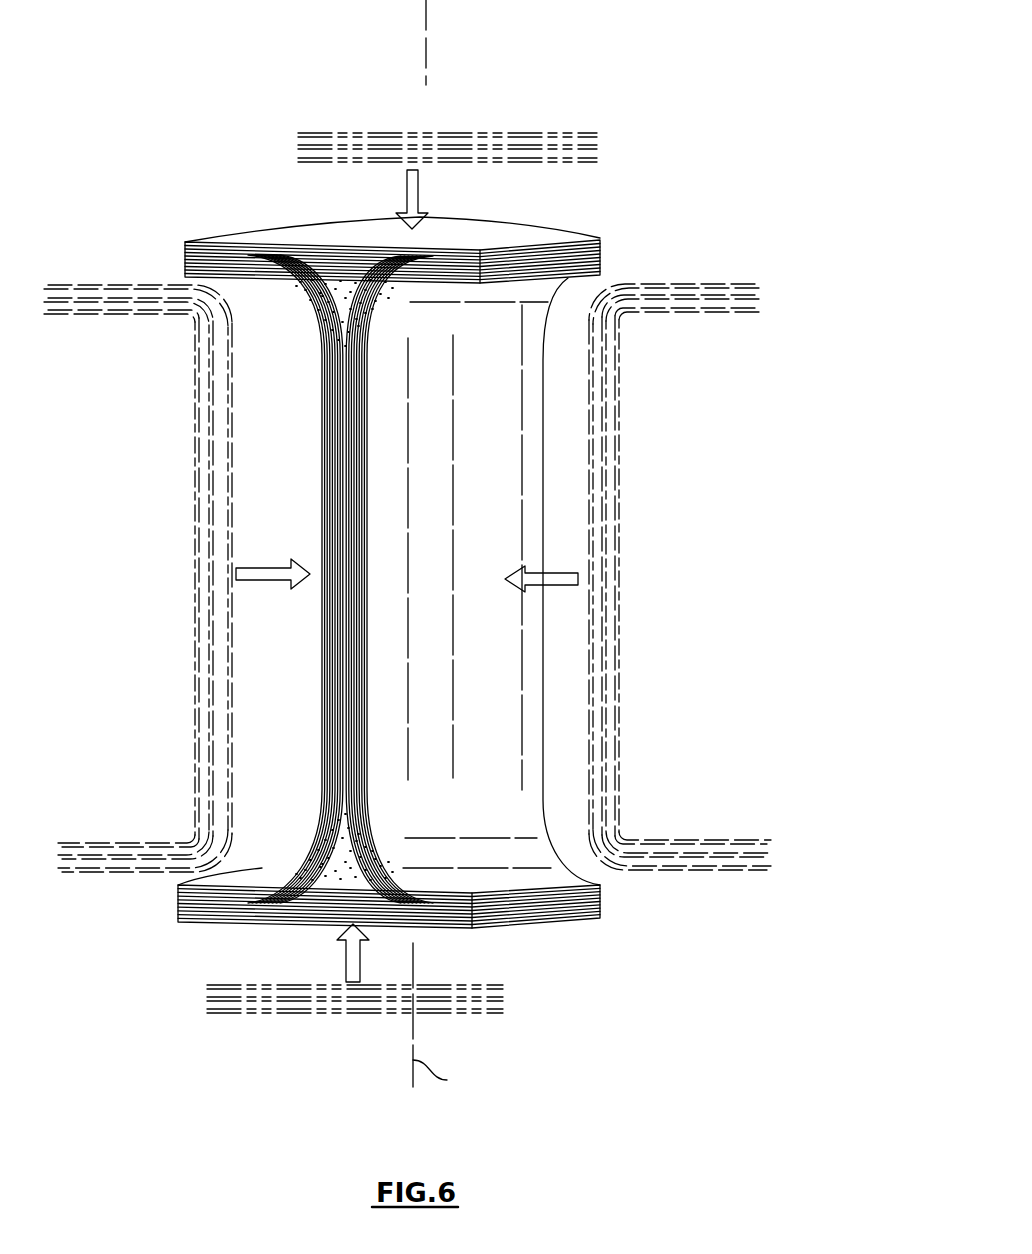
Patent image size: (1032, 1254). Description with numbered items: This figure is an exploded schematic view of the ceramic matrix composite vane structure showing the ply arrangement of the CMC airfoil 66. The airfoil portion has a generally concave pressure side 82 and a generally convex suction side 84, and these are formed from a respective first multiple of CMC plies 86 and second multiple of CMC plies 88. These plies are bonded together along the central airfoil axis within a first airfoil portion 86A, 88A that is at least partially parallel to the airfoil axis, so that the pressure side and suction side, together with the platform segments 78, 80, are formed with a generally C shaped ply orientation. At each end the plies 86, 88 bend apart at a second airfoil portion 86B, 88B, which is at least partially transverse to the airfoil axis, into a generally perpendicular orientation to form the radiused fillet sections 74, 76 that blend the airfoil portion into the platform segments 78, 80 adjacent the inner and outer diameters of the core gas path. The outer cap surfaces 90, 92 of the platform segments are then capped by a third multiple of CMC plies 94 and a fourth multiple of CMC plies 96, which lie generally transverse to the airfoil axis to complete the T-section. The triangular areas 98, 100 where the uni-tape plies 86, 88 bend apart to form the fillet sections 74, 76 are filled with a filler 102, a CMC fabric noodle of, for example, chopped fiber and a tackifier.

The CMC airfoil 66 is at (818, 448).
The fillet section 74 is at (645, 829).
The fillet section 76 is at (643, 328).
The platform segment 78 is at (408, 1011).
The platform segment 80 is at (447, 114).
The pressure side 82 is at (630, 523).
The suction side 84 is at (187, 527).
The first multiple of CMC plies 86 is at (701, 577).
The first airfoil portion 86A is at (623, 615).
The second airfoil portion 86B is at (722, 313).
The second multiple of CMC plies 88 is at (138, 578).
The first airfoil portion 88A is at (203, 571).
The second airfoil portion 88B is at (108, 314).
The outer cap surface 90 is at (444, 927).
The outer cap surface 92 is at (447, 229).
The third multiple of CMC plies 94 is at (498, 928).
The fourth multiple of CMC plies 96 is at (527, 232).
The triangular area 98 is at (327, 908).
The triangular area 100 is at (318, 232).
The filler 102 is at (342, 282).